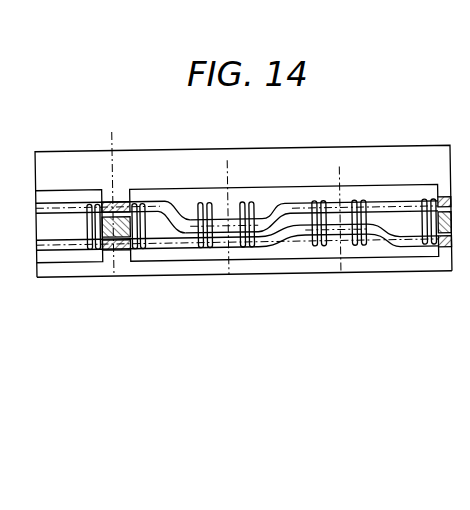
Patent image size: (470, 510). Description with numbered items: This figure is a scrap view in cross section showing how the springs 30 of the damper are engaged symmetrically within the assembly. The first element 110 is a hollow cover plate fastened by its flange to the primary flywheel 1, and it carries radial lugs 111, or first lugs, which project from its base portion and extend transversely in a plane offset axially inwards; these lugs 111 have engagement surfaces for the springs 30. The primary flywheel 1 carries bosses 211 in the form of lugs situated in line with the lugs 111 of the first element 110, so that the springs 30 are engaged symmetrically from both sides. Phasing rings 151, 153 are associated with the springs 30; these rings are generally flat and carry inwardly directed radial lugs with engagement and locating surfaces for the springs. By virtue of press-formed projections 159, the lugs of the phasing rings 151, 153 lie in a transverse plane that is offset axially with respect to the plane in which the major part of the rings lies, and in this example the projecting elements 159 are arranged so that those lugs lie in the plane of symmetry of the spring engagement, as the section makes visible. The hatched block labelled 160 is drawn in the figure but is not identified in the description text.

The primary flywheel 1 is at (359, 145).
The springs 30 is at (312, 201).
The first element 110 is at (289, 277).
The radial lugs 111 is at (128, 259).
The phasing ring 151 is at (158, 202).
The phasing ring 153 is at (165, 260).
The press-formed projections 159 is at (200, 202).
The insert block 160 is at (96, 230).
The bosses 211 is at (113, 134).